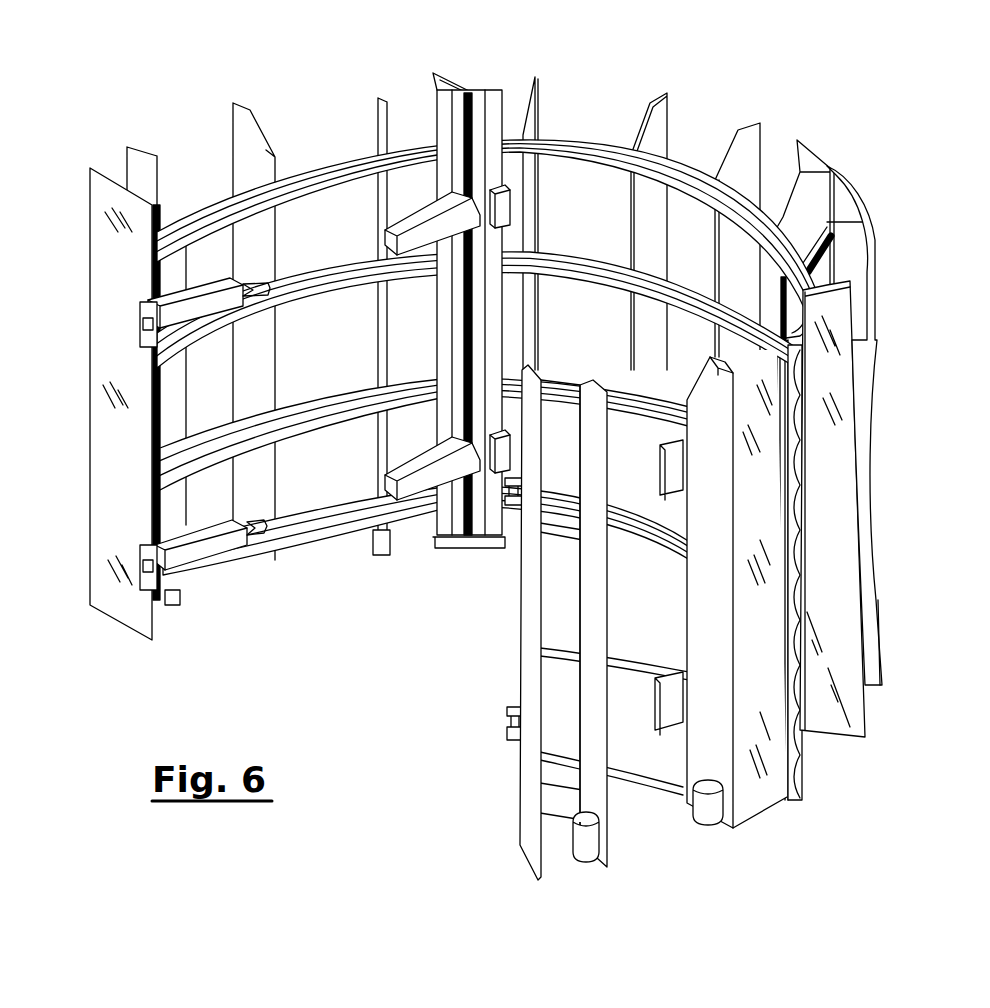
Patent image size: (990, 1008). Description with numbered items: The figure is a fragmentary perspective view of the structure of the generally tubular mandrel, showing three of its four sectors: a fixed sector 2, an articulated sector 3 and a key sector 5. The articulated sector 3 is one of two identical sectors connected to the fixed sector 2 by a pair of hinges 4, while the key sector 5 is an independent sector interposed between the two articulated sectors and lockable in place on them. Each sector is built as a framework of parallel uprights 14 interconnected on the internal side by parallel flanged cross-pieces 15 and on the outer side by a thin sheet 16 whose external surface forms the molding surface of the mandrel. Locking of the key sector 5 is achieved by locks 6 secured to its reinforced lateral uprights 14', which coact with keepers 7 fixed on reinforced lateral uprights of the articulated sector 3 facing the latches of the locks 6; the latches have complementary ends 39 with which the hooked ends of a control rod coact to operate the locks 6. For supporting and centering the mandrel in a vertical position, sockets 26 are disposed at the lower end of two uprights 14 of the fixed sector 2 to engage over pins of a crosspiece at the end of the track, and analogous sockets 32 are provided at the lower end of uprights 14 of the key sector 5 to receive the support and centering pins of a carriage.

The fixed sector 2 is at (691, 847).
The articulated sector 3 is at (697, 120).
The hinges 4 is at (511, 514).
The key sector 5 is at (198, 132).
The locks 6 is at (430, 210).
The keepers 7 is at (500, 210).
The uprights 14 is at (455, 460).
The reinforced lateral uprights 14' is at (262, 333).
The flanged cross-pieces 15 is at (310, 157).
The thin sheet 16 is at (878, 258).
The sockets 26 is at (575, 838).
The sockets 32 is at (175, 600).
The complementary ends 39 is at (365, 265).